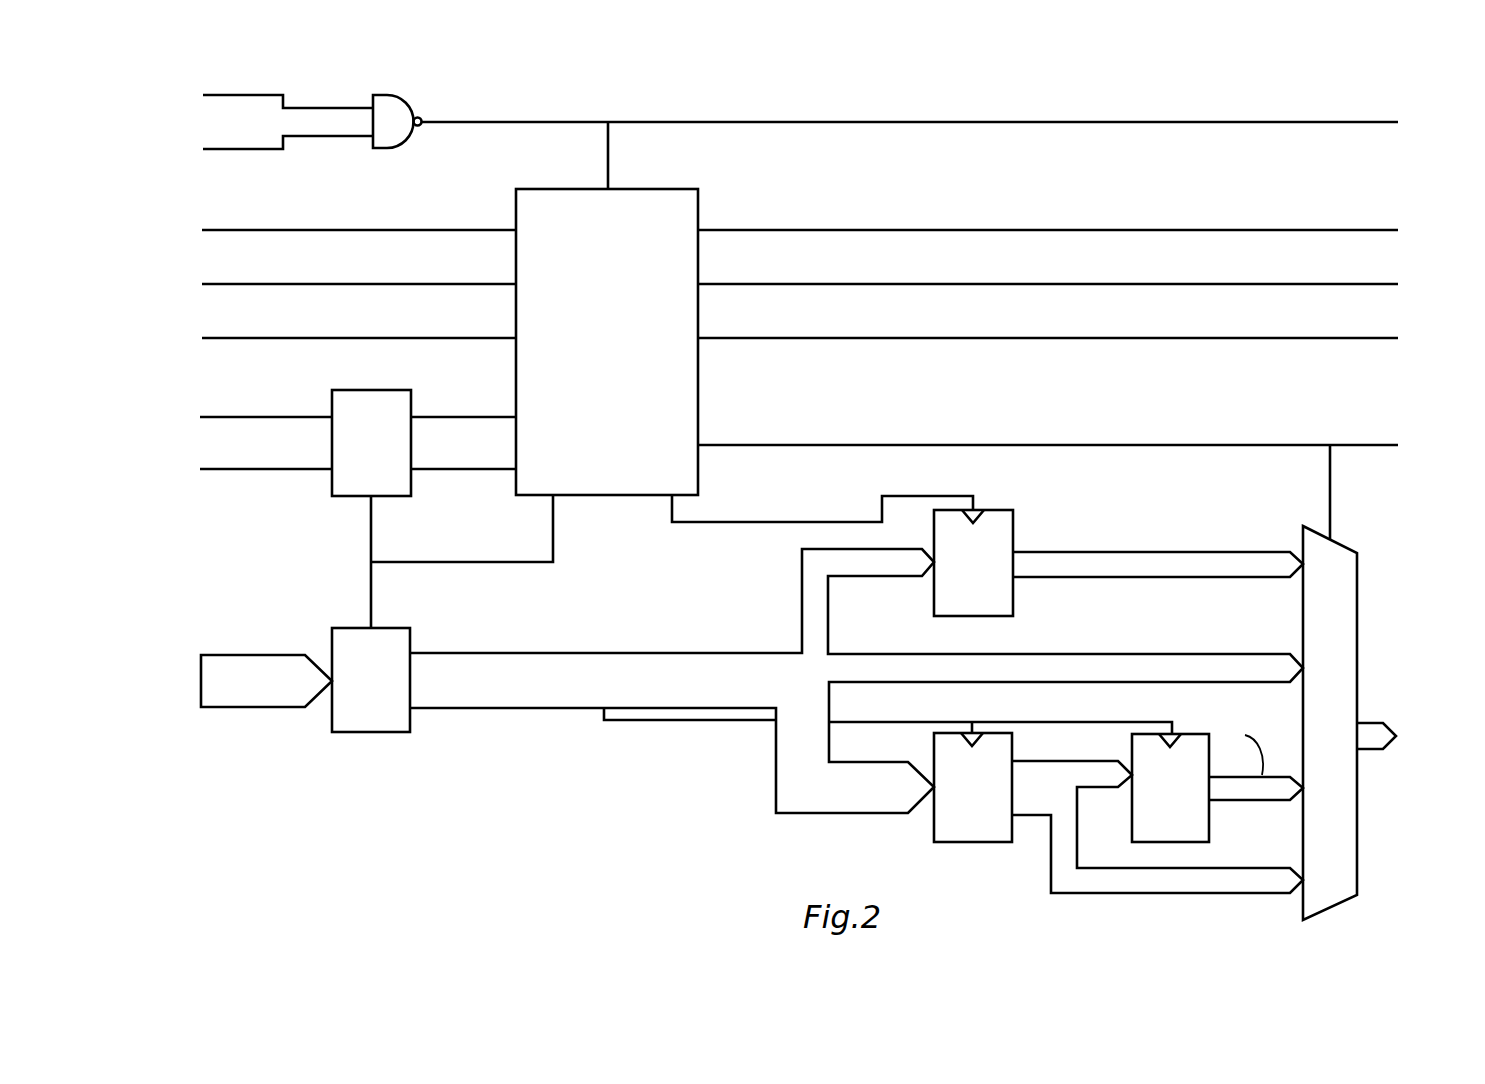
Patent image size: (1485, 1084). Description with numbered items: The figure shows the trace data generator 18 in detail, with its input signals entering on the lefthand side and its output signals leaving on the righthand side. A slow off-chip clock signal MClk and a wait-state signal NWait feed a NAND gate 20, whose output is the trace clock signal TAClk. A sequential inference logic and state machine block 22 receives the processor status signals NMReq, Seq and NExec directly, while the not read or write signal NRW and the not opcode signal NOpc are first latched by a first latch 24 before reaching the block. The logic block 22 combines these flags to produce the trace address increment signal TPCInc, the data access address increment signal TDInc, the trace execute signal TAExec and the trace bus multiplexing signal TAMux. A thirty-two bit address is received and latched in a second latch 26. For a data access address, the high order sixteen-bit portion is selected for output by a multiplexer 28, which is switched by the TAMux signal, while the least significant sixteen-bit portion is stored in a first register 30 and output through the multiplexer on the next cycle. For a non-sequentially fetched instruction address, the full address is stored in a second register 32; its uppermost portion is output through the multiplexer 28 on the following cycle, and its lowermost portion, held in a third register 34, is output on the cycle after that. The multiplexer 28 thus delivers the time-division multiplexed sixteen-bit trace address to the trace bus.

The trace data generator 18 is at (352, 817).
The NAND gate 20 is at (383, 95).
The sequential inference logic and state machine block 22 is at (643, 189).
The first latch 24 is at (383, 390).
The second latch 26 is at (355, 628).
The multiplexer 28 is at (1357, 593).
The first register 30 is at (990, 510).
The second register 32 is at (984, 842).
The third register 34 is at (1209, 827).